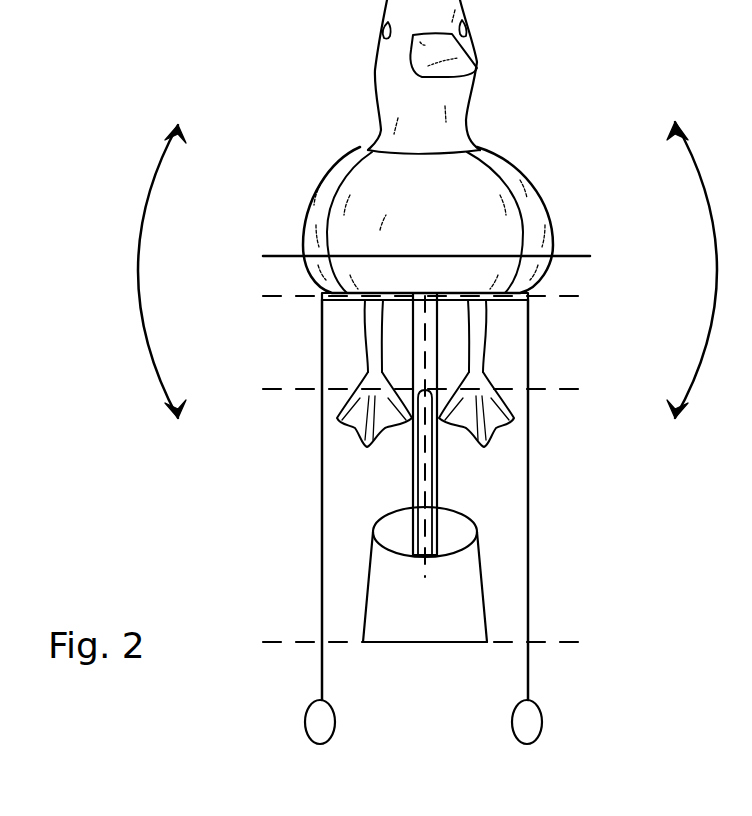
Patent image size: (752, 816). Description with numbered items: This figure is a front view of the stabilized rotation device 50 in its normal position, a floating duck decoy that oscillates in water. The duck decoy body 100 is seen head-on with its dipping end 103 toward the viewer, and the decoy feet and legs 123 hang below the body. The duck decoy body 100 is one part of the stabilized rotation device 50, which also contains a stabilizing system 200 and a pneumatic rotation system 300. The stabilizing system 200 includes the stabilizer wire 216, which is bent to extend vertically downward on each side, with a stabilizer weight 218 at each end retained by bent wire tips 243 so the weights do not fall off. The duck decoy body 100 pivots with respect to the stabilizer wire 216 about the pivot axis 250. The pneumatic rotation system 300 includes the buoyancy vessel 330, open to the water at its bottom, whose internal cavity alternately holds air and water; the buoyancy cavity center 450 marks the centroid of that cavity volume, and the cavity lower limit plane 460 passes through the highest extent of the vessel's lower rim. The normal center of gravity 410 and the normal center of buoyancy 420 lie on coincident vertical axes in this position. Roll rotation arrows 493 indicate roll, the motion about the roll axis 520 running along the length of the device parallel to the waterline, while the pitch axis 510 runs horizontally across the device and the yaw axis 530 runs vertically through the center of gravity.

The stabilized rotation device 50 is at (548, 265).
The duck decoy body 100 is at (553, 233).
The dipping end 103 is at (399, 199).
The decoy feet and legs 123 is at (365, 384).
The stabilizing system 200 is at (465, 496).
The stabilizer wire 216 is at (528, 600).
The stabilizer weights 218 is at (544, 730).
The wire tips 243 is at (530, 751).
The pivot axis 250 is at (429, 290).
The pneumatic rotation system 300 is at (437, 452).
The buoyancy vessel 330 is at (455, 645).
The normal center of gravity 410 is at (437, 450).
The normal center of buoyancy 420 is at (425, 279).
The buoyancy cavity center 450 is at (423, 593).
The cavity lower limit plane 460 is at (348, 643).
The roll rotation arrows 493 is at (155, 370).
The pitch axis 510 is at (578, 392).
The roll axis 520 is at (410, 464).
The yaw axis 530 is at (415, 567).